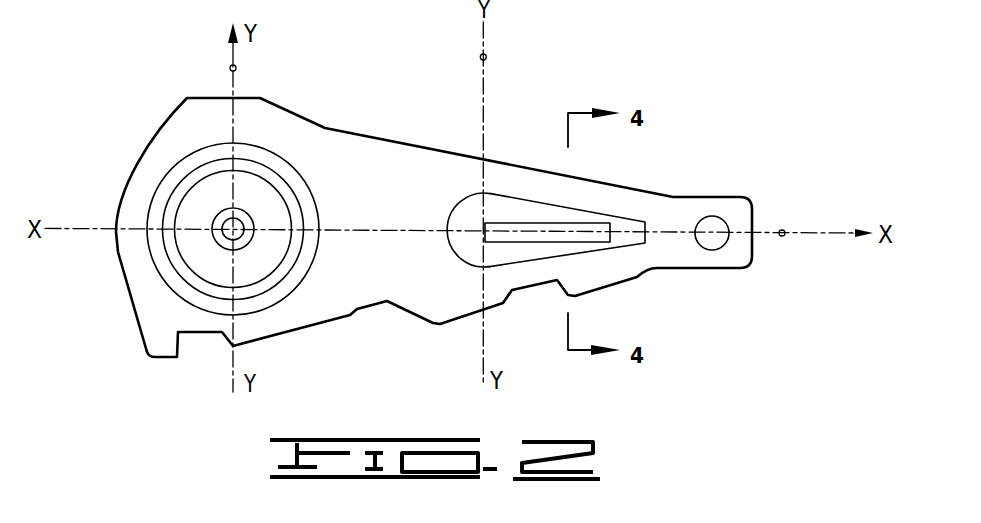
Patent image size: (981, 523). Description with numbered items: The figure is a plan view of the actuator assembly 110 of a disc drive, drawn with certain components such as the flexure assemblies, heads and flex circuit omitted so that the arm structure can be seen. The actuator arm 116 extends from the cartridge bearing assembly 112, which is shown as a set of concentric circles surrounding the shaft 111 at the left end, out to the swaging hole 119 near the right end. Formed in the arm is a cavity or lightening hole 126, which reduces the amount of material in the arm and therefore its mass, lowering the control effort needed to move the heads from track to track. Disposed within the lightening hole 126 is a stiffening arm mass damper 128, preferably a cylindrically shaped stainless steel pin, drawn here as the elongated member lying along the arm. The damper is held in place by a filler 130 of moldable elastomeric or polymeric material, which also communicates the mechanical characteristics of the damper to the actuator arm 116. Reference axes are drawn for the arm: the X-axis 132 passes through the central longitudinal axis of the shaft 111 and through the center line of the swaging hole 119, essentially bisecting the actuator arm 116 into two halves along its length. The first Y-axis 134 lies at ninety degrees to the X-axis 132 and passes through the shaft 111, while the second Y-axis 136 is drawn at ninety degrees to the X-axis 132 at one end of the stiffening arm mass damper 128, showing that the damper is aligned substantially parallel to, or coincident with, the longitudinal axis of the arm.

The actuator assembly 110 is at (162, 51).
The shaft 111 is at (227, 217).
The cartridge bearing assembly 112 is at (254, 181).
The actuator arm 116 is at (350, 153).
The swaging hole 119 is at (714, 205).
The lightening hole 126 is at (511, 192).
The stiffening arm mass damper 128 is at (564, 224).
The filler 130 is at (467, 250).
The X-axis 132 is at (782, 230).
The first Y-axis 134 is at (237, 67).
The second Y-axis 136 is at (487, 56).